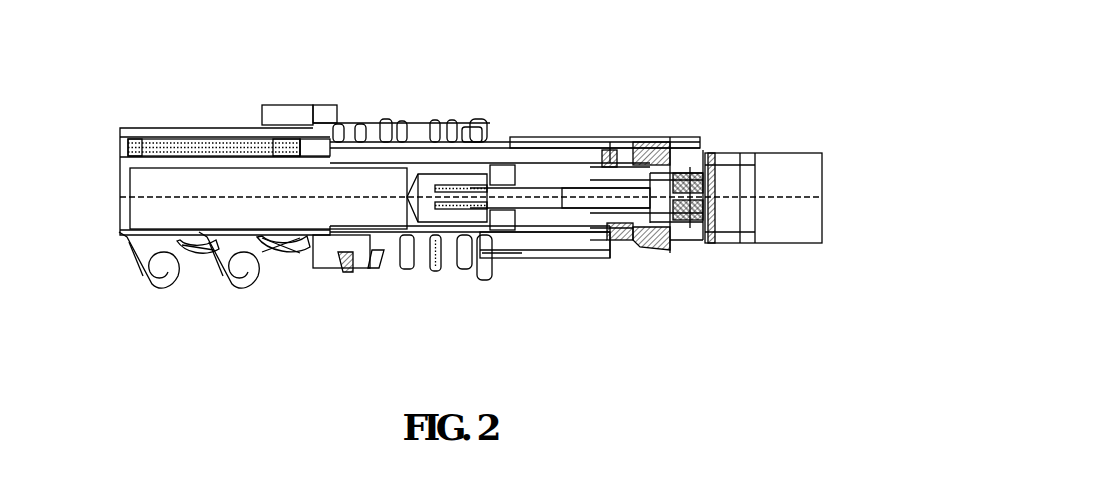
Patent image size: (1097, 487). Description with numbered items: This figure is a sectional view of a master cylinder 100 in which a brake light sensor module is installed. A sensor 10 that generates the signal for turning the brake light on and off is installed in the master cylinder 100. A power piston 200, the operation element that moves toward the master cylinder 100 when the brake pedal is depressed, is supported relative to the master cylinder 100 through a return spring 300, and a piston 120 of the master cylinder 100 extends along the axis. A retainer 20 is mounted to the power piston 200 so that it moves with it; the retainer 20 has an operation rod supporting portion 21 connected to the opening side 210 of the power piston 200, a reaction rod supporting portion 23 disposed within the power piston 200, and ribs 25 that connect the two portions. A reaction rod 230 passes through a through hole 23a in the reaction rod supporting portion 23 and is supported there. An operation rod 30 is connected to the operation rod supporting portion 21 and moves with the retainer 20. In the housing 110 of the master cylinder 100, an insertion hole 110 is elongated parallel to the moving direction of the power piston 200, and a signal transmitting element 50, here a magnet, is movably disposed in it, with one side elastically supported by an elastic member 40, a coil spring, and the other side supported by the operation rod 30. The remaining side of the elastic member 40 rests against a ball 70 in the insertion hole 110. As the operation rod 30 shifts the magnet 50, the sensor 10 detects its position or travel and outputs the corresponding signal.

The sensor 10 is at (283, 112).
The retainer 20 is at (517, 145).
The operation rod supporting portion 21 is at (470, 143).
The reaction rod supporting portion 23 is at (615, 240).
The through hole 23a is at (617, 167).
The ribs 25 is at (558, 150).
The operation rod 30 is at (400, 143).
The elastic member 40 is at (172, 152).
The signal transmitting element (magnet) 50 is at (254, 150).
The ball 70 is at (126, 143).
The master cylinder 100 is at (262, 241).
The housing / insertion hole 110 is at (160, 152).
The piston 120 is at (432, 234).
The power piston 200 is at (600, 243).
The opening side 210 is at (490, 270).
The reaction rod 230 is at (578, 199).
The return spring 300 is at (392, 240).